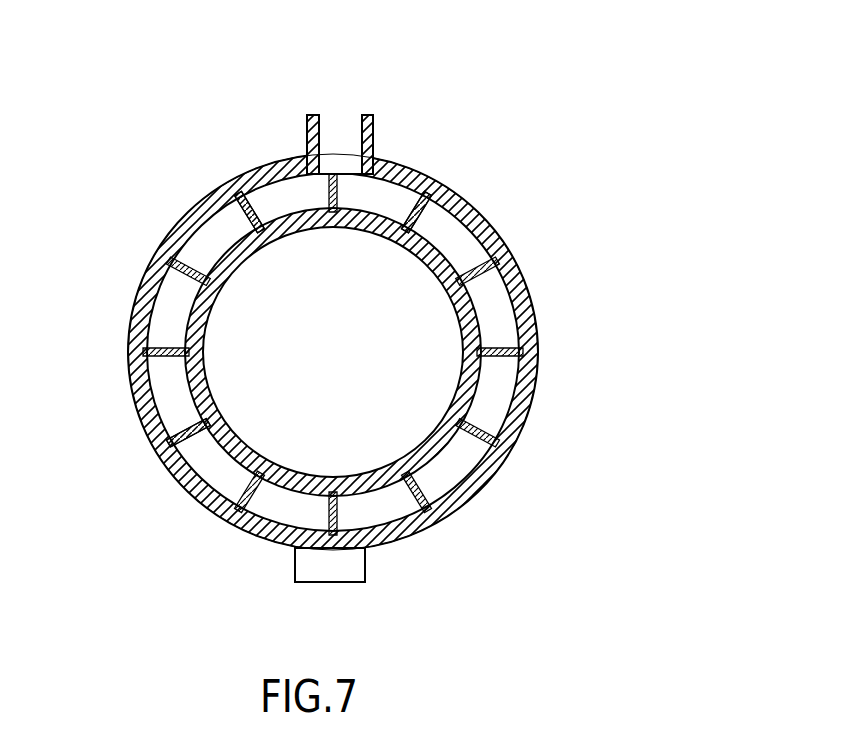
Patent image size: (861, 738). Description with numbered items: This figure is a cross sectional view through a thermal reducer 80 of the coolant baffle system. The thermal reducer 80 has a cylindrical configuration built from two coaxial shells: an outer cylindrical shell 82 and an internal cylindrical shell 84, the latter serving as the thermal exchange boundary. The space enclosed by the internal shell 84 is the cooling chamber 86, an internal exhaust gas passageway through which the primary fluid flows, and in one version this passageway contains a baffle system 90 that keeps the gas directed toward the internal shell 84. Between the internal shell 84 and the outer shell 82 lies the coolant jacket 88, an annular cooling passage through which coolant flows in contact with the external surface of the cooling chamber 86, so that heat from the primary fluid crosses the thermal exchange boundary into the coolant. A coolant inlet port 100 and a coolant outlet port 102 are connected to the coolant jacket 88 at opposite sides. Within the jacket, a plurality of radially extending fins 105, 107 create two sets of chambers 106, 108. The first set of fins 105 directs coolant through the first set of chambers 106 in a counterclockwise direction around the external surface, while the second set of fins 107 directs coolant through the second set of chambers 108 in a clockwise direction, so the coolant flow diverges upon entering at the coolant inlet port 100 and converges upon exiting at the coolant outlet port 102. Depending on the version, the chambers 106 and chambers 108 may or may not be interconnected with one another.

The thermal reducer 80 is at (606, 316).
The outer cylindrical shell 82 is at (503, 233).
The internal cylindrical shell 84 is at (433, 250).
The cooling chamber 86 is at (365, 313).
The coolant jacket 88 is at (497, 312).
The baffle system 90 is at (377, 422).
The coolant inlet port 100 is at (377, 135).
The coolant outlet port 102 is at (366, 558).
The first set of fins 105 is at (497, 365).
The first set of chambers 106 is at (167, 313).
The second set of fins 107 is at (477, 430).
The second set of chambers 108 is at (220, 240).